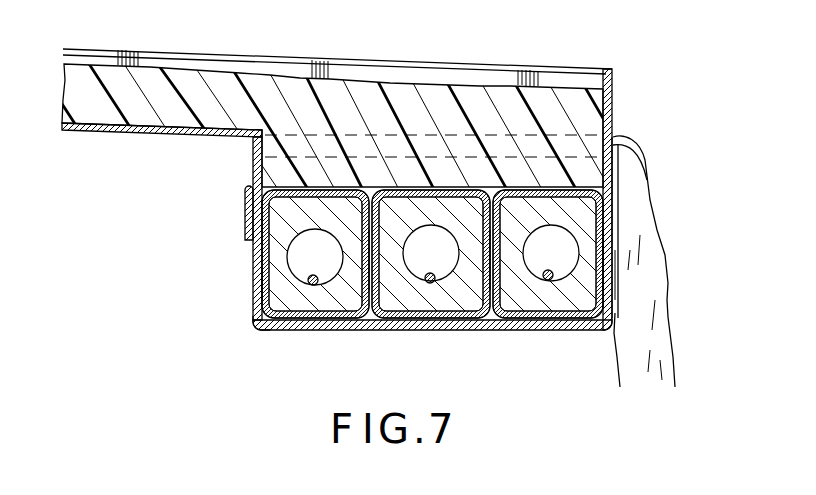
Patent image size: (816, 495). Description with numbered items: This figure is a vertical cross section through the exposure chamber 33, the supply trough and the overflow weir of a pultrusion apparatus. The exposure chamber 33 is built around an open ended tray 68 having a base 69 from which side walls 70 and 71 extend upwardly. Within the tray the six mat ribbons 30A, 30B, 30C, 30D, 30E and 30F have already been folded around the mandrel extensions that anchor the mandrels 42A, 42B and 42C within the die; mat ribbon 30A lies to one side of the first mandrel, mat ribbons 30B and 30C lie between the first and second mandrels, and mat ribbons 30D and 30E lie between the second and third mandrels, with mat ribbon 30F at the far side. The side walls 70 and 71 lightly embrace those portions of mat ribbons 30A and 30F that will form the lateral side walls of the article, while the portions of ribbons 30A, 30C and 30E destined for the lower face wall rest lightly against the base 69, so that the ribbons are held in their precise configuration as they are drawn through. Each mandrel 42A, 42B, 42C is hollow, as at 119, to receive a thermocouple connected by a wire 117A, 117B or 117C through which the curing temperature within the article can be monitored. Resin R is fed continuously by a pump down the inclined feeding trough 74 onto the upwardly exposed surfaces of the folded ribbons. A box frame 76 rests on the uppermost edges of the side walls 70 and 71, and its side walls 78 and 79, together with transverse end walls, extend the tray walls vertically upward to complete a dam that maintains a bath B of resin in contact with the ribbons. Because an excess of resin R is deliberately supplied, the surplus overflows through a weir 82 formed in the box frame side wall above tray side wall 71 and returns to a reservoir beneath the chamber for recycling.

The bath of resin B is at (437, 81).
The resin R is at (178, 78).
The exposure chamber 33 is at (628, 88).
The feeding trough 74 is at (128, 134).
The side wall of box frame 78 is at (253, 174).
The box frame 76 is at (246, 208).
The side wall 70 is at (256, 283).
The open ended tray 68 is at (250, 303).
The base 69 is at (262, 328).
The mat ribbon 30A is at (262, 233).
The mat ribbon 30B is at (353, 312).
The mat ribbon 30C is at (376, 221).
The mat ribbon 30D is at (478, 297).
The mat ribbon 30E is at (503, 218).
The mat ribbon 30F is at (593, 302).
The mandrel 42A is at (327, 302).
The mandrel 42B is at (405, 295).
The mandrel 42C is at (527, 295).
The wire 117A is at (314, 275).
The wire 117B is at (431, 273).
The wire 117C is at (549, 270).
The hollow of mandrel 119 is at (288, 257).
The side wall of box frame 79 is at (618, 140).
The weir 82 is at (612, 173).
The side wall 71 is at (608, 273).